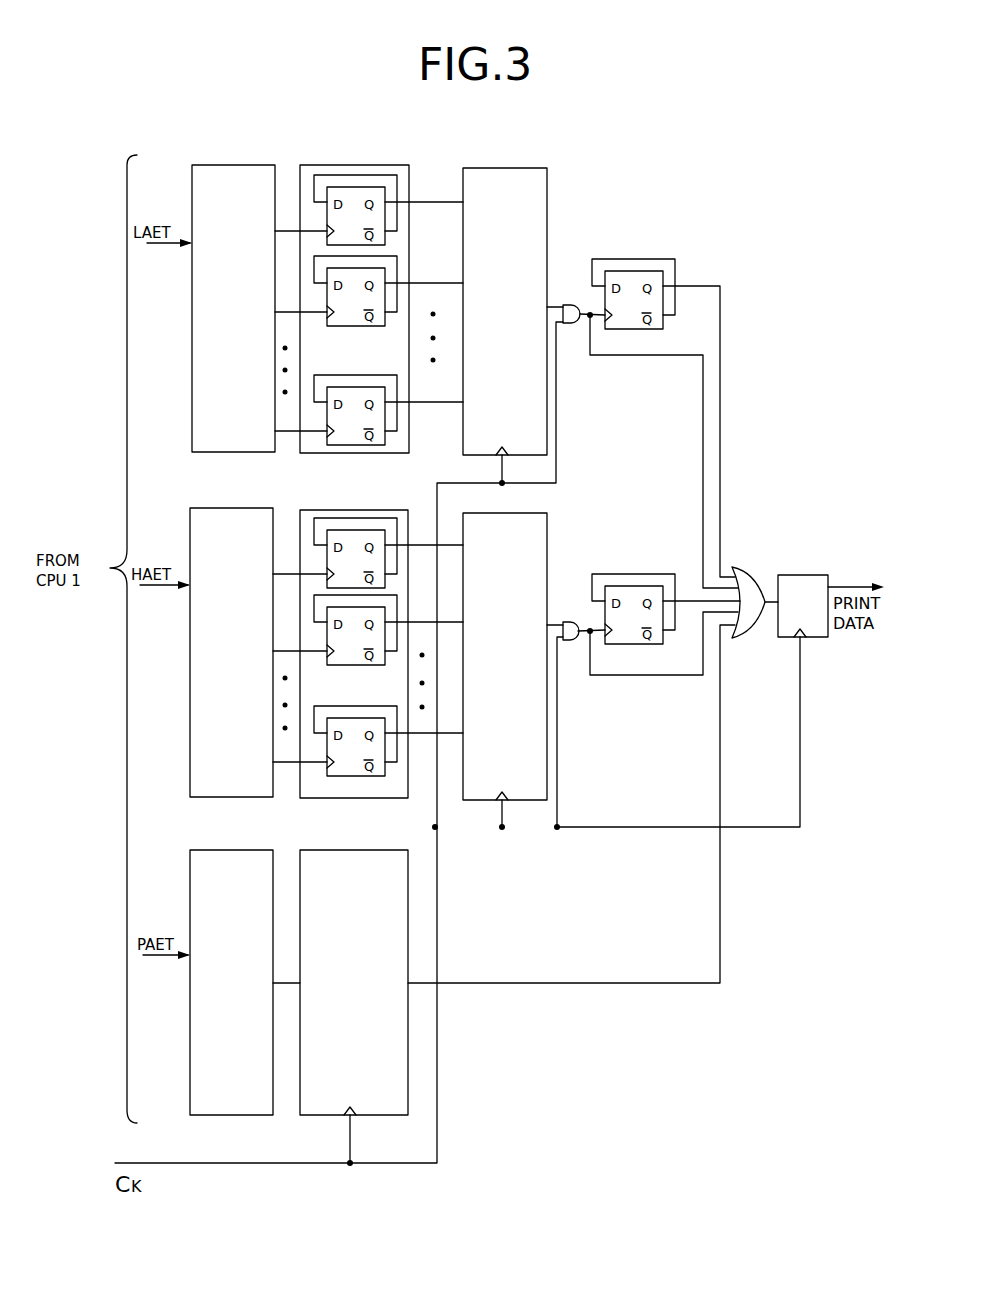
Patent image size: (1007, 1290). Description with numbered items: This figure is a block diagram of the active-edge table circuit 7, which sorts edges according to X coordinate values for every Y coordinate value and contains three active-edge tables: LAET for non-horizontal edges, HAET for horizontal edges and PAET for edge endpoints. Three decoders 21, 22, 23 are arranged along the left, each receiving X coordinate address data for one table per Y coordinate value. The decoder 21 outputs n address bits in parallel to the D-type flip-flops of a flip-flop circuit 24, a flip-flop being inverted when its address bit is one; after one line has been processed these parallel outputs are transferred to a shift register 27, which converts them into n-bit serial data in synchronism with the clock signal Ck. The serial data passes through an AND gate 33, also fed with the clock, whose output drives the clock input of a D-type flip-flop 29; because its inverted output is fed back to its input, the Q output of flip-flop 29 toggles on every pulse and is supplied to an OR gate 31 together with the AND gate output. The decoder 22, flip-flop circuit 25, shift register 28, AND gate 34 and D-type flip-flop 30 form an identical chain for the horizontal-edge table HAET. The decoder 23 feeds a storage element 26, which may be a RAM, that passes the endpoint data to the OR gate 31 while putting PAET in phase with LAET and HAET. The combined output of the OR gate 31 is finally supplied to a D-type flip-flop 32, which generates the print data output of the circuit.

The active-edge table circuit 7 is at (760, 153).
The decoder 21 is at (192, 366).
The decoder 22 is at (190, 715).
The decoder 23 is at (190, 1026).
The flip-flop circuit 24 is at (409, 165).
The flip-flop circuit 25 is at (350, 510).
The storage element 26 is at (350, 850).
The shift register 27 is at (547, 192).
The shift register 28 is at (547, 537).
The D-type flip-flop 29 is at (636, 329).
The D-type flip-flop 30 is at (648, 644).
The OR gate 31 is at (742, 562).
The D-type flip-flop 32 is at (805, 573).
The AND gate 33 is at (574, 326).
The AND gate 34 is at (570, 642).